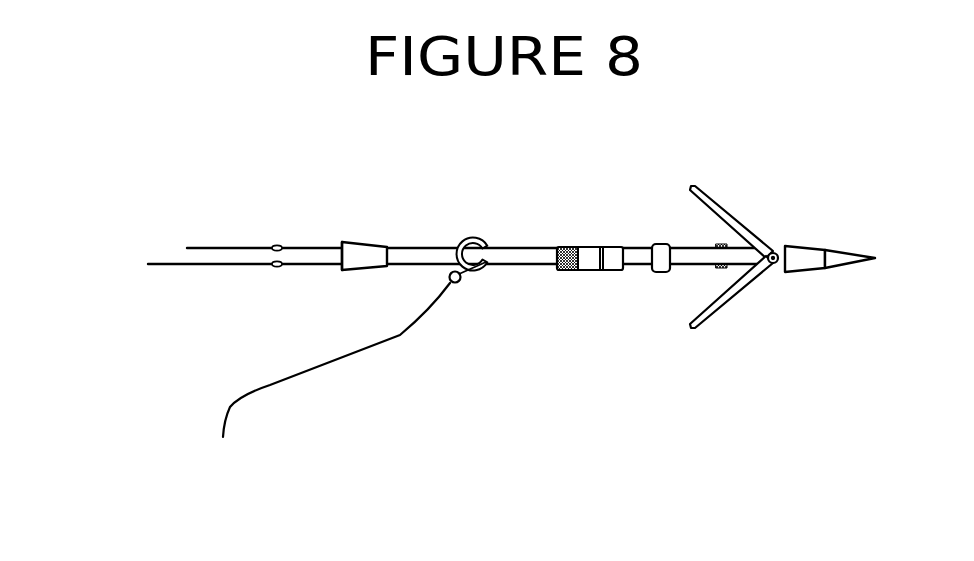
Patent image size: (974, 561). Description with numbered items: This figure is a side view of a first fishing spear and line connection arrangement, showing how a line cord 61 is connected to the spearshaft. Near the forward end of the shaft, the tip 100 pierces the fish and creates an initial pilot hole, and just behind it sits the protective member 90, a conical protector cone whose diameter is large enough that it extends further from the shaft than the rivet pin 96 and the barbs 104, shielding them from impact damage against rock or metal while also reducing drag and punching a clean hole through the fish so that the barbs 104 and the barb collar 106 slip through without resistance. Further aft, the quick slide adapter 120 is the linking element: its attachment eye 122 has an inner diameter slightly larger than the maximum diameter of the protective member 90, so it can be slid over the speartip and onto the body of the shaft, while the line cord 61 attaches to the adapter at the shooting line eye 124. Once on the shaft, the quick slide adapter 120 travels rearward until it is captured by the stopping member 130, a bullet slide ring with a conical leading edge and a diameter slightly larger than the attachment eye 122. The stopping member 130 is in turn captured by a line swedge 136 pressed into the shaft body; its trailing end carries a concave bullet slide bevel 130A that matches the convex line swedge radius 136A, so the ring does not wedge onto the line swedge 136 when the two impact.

The line cord 61 is at (265, 390).
The protective member 90 is at (810, 273).
The rivet pin 96 is at (778, 250).
The tip 100 is at (860, 260).
The barbs 104 is at (752, 242).
The barb collar 106 is at (653, 245).
The quick slide adapter 120 is at (473, 237).
The attachment eye 122 is at (481, 279).
The shooting line eye 124 is at (461, 283).
The stopping member 130 is at (375, 246).
The bullet slide bevel 130A is at (342, 241).
The line swedge 136 is at (272, 246).
The line swedge radius 136A is at (278, 266).